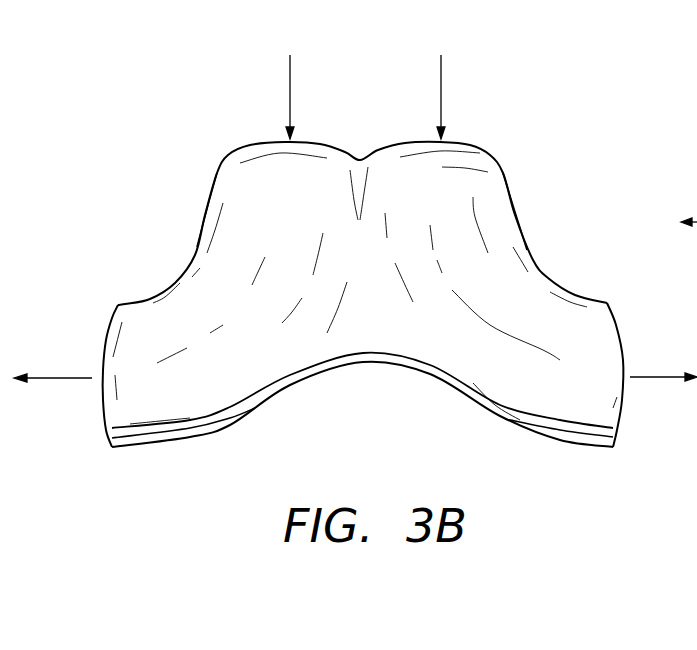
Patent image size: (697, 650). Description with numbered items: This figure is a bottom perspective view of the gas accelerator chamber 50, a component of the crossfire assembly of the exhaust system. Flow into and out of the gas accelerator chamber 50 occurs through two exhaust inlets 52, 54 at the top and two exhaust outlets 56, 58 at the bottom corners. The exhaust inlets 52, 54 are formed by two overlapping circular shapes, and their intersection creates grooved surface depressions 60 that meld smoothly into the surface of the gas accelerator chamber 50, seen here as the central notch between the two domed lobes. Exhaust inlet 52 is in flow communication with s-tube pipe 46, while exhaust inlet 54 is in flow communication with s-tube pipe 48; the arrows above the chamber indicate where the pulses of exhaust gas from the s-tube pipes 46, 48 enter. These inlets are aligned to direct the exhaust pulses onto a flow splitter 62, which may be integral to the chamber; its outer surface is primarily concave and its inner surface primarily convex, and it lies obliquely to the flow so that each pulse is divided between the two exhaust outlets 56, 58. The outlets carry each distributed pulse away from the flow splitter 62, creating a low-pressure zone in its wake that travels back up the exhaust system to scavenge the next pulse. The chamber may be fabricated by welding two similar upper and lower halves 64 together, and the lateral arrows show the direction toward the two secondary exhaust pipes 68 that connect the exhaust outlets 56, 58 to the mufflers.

The s-tube pipe 46 is at (441, 85).
The s-tube pipe 48 is at (290, 85).
The gas accelerator chamber 50 is at (520, 178).
The exhaust inlet 52 is at (488, 155).
The exhaust inlet 54 is at (253, 145).
The exhaust outlet 56 is at (620, 423).
The exhaust outlet 58 is at (110, 435).
The grooved surface depression 60 is at (358, 163).
The flow splitter 62 is at (367, 362).
The upper and lower halves 64 is at (472, 287).
The secondary exhaust pipe 68 is at (355, 313).